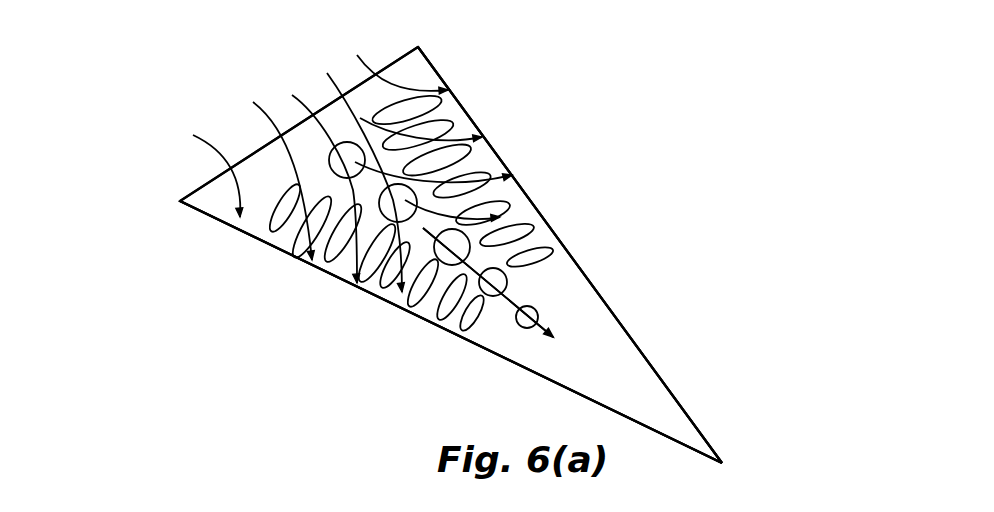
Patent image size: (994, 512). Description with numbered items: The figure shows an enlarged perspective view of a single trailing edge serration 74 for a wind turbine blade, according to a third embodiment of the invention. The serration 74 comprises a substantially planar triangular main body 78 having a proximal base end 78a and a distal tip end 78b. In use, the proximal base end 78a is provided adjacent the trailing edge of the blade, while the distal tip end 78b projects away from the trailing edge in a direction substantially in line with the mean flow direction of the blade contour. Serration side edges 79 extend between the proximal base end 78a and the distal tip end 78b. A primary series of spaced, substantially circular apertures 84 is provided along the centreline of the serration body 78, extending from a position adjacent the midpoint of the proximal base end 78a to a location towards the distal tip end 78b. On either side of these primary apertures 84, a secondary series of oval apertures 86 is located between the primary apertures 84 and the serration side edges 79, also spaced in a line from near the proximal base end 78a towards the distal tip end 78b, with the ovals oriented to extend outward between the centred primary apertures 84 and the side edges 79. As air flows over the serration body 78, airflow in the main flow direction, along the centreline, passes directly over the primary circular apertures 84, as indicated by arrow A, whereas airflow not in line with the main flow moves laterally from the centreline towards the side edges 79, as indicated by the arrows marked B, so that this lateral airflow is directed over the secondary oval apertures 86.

The serration 74 is at (627, 177).
The triangular main body 78 is at (598, 330).
The proximal base end 78a is at (200, 187).
The distal tip end 78b is at (723, 463).
The serration side edges 79 is at (477, 123).
The primary series of circular apertures 84 is at (538, 313).
The secondary series of oval apertures 86 is at (468, 318).
The arrow indicating main flow direction A is at (497, 290).
The arrows indicating lateral airflow B is at (342, 162).